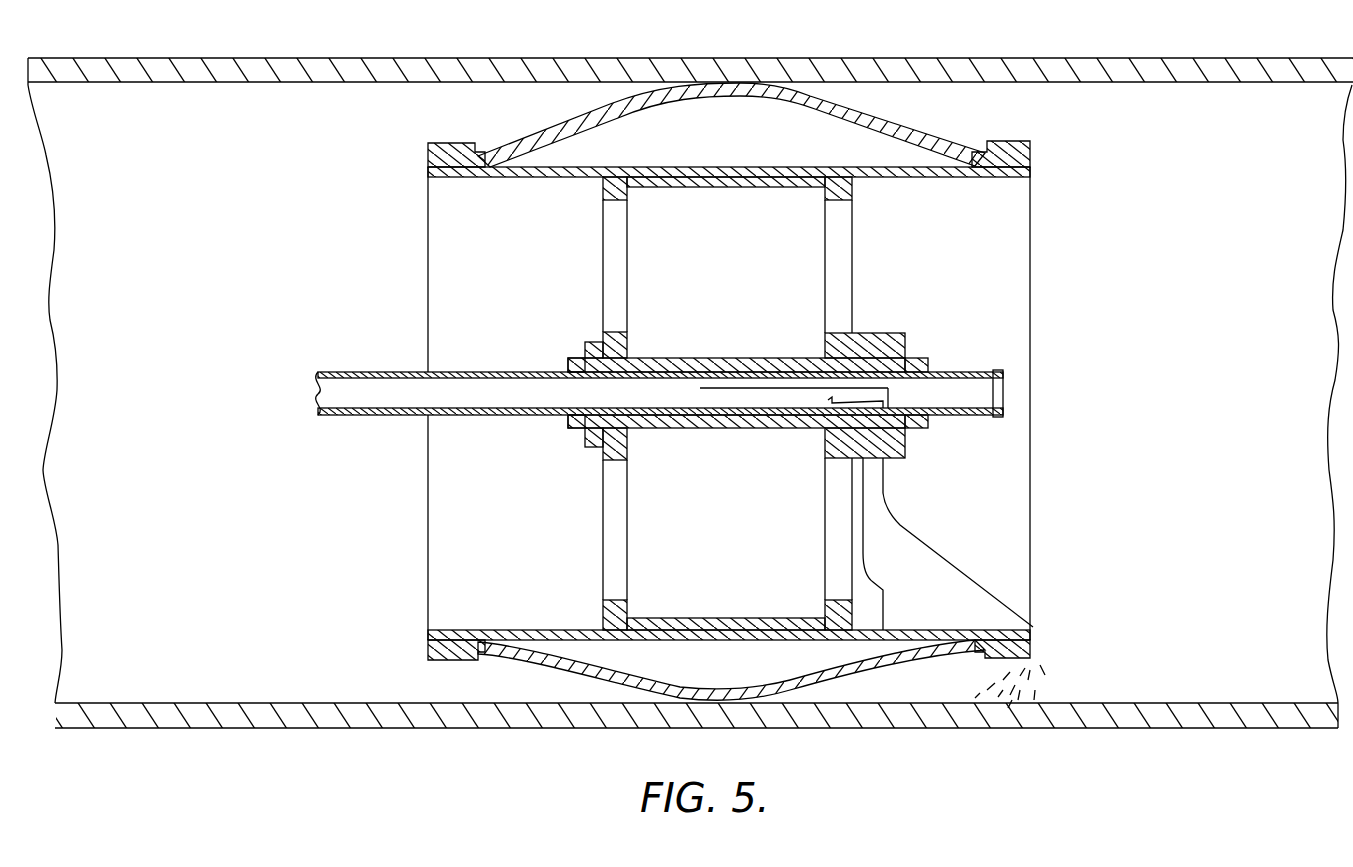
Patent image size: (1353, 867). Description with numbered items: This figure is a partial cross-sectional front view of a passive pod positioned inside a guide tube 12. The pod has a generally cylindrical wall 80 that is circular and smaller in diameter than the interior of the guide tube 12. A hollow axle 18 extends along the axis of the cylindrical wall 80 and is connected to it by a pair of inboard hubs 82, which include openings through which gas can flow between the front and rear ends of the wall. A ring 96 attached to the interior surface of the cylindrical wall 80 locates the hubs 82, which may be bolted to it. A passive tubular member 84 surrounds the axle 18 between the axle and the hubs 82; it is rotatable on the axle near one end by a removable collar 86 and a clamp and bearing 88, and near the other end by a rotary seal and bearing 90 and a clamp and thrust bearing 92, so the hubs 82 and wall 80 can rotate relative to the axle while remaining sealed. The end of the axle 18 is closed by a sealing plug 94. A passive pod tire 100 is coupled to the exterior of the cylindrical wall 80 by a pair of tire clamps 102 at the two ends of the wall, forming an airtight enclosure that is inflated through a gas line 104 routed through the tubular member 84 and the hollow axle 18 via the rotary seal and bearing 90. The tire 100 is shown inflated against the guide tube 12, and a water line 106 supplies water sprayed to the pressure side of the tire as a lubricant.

The guide tube 12 is at (1250, 58).
The axle 18 is at (370, 416).
The cylindrical wall 80 is at (925, 178).
The hubs 82 is at (602, 200).
The passive tubular member 84 is at (745, 358).
The removable collar 86 is at (596, 449).
The clamp and bearing 88 is at (571, 430).
The rotary seal and bearing 90 is at (888, 333).
The clamp and thrust bearing 92 is at (916, 359).
The sealing plug 94 is at (1003, 394).
The ring 96 is at (732, 618).
The passive pod tire 100 is at (902, 123).
The tire clamps 102 is at (452, 143).
The gas line 104 is at (884, 589).
The water line 106 is at (1040, 659).